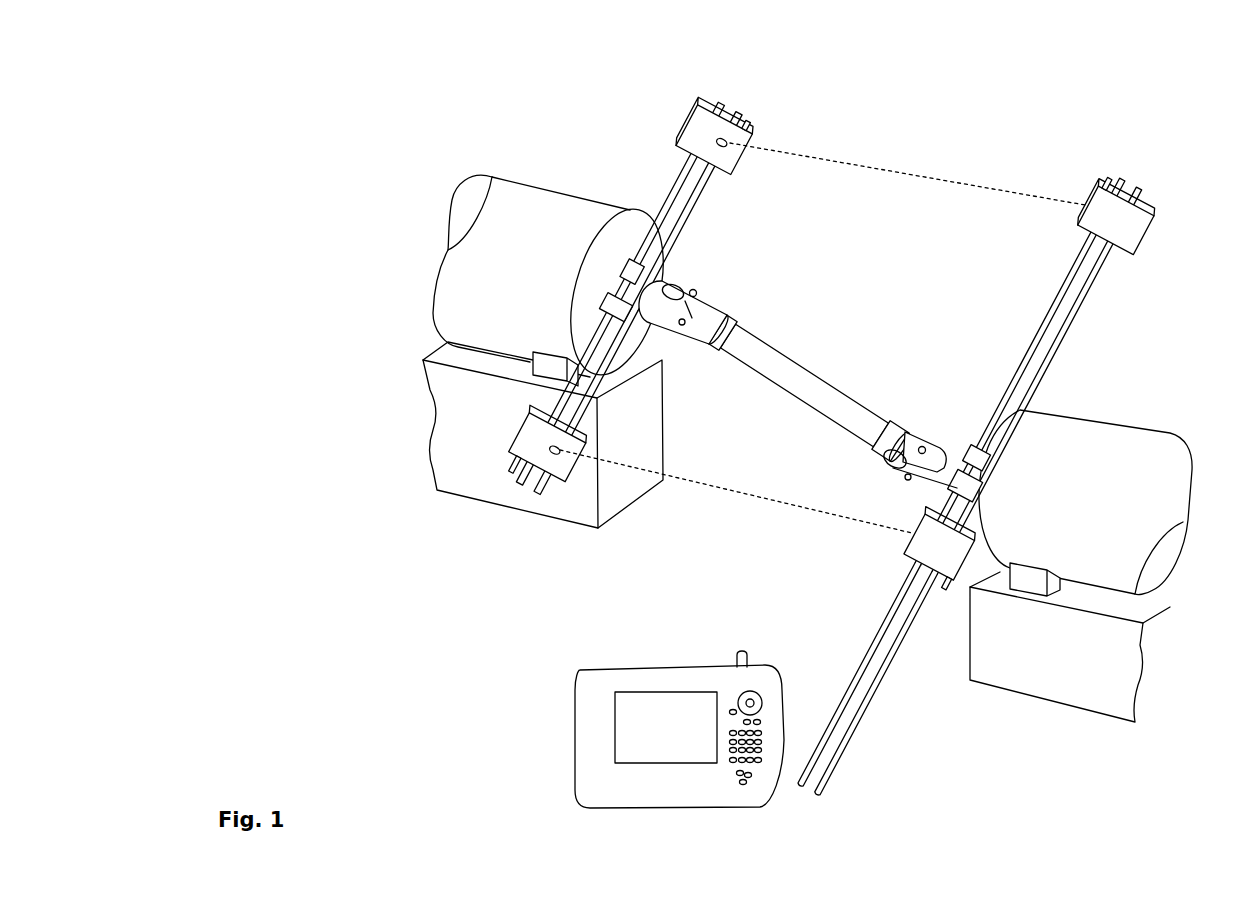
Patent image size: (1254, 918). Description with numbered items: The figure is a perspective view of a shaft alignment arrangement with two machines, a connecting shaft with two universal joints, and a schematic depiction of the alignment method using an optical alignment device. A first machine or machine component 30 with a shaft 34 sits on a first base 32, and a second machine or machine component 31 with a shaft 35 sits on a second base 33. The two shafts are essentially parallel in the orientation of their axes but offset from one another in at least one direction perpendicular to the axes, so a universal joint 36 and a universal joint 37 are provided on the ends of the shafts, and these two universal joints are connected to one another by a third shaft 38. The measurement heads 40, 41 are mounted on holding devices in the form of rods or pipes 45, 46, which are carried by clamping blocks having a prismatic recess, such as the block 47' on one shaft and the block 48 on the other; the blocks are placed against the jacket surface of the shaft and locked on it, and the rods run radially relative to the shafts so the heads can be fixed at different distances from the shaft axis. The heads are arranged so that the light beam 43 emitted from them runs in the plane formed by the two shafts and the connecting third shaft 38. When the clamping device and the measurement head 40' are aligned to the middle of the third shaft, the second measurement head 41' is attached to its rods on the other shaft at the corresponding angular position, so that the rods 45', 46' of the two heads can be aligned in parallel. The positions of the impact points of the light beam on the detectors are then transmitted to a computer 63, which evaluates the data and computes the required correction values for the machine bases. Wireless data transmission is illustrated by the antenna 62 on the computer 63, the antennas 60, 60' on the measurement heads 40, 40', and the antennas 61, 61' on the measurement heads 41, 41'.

The first machine or machine component 30 is at (555, 188).
The second machine or machine component 31 is at (1160, 432).
The first base 32 is at (480, 426).
The second base 33 is at (1044, 658).
The shaft 34 is at (613, 287).
The shaft 35 is at (972, 480).
The universal joint 36 is at (650, 292).
The universal joint 37 is at (955, 457).
The third shaft 38 is at (842, 413).
The measurement head 40 is at (767, 113).
The measurement head 40' is at (547, 514).
The measurement head 41 is at (1080, 153).
The measurement head 41' is at (895, 565).
The light beam 43 is at (878, 167).
The holding device (rods or pipes) 45 is at (678, 181).
The rods 45' is at (561, 461).
The holding device (rods or pipes) 46 is at (1054, 313).
The rods 46' is at (878, 679).
The block with prismatic recess 47' is at (667, 355).
The block with prismatic recess 48 is at (973, 455).
The antenna 60 is at (770, 91).
The antenna 60' is at (476, 540).
The antenna 61 is at (1099, 121).
The antenna 61' is at (942, 617).
The antenna 62 is at (740, 658).
The computer 63 is at (640, 682).